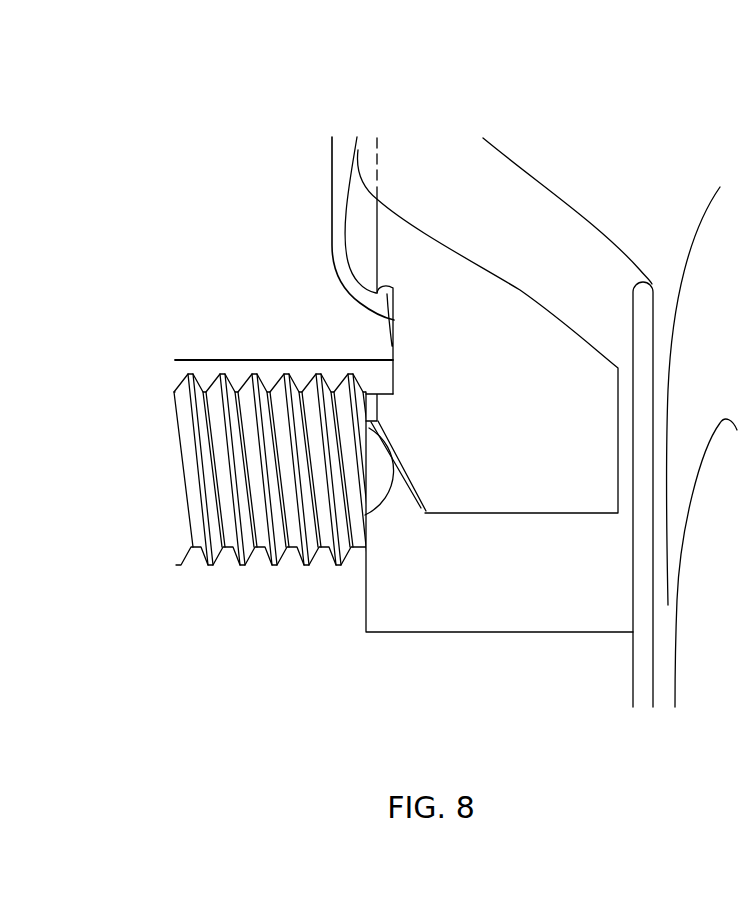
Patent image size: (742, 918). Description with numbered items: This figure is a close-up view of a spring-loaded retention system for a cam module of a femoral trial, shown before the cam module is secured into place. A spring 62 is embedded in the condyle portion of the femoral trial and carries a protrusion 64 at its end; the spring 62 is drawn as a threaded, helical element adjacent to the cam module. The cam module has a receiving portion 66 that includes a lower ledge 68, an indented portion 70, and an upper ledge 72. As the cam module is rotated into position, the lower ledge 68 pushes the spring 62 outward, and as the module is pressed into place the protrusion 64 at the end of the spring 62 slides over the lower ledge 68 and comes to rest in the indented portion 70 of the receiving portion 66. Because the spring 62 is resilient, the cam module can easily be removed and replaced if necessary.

The spring 62 is at (275, 452).
The protrusion 64 is at (382, 493).
The receiving portion 66 is at (367, 338).
The lower ledge 68 is at (385, 394).
The indented portion 70 is at (392, 290).
The upper ledge 72 is at (358, 150).